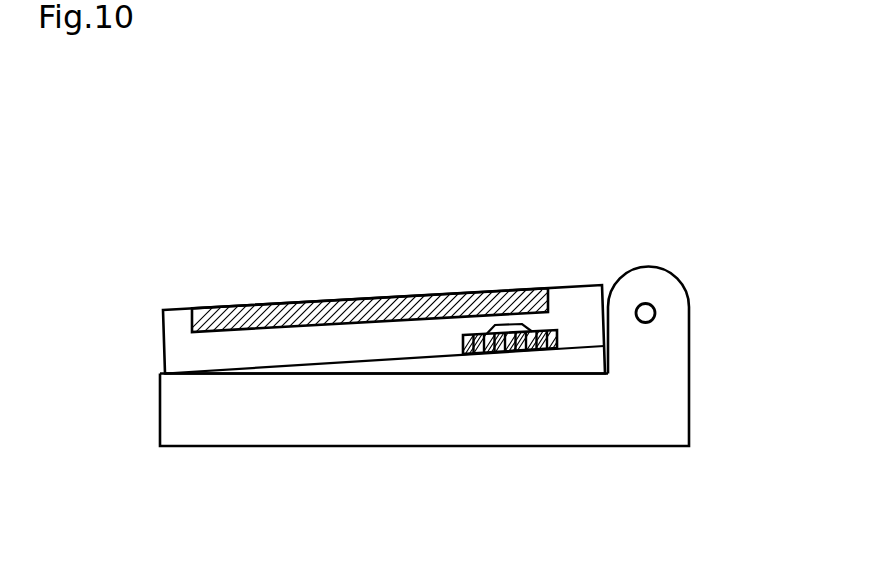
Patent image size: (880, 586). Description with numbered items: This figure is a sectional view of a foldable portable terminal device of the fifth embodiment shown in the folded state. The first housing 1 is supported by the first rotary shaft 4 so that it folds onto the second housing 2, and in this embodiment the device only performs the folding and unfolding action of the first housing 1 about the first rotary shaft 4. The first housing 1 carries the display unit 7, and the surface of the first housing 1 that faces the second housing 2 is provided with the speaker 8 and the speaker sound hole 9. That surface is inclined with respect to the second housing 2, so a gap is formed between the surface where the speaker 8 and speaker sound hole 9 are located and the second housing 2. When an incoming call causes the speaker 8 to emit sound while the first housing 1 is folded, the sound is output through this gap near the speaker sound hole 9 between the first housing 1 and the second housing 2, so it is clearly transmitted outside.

The first housing 1 is at (572, 285).
The second housing 2 is at (363, 428).
The first rotary shaft 4 is at (654, 307).
The display unit 7 is at (330, 300).
The speaker 8 is at (488, 327).
The speaker sound hole 9 is at (537, 352).